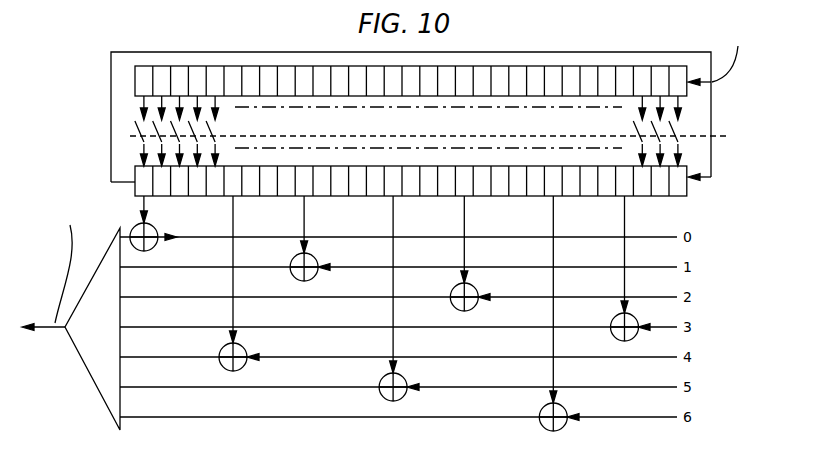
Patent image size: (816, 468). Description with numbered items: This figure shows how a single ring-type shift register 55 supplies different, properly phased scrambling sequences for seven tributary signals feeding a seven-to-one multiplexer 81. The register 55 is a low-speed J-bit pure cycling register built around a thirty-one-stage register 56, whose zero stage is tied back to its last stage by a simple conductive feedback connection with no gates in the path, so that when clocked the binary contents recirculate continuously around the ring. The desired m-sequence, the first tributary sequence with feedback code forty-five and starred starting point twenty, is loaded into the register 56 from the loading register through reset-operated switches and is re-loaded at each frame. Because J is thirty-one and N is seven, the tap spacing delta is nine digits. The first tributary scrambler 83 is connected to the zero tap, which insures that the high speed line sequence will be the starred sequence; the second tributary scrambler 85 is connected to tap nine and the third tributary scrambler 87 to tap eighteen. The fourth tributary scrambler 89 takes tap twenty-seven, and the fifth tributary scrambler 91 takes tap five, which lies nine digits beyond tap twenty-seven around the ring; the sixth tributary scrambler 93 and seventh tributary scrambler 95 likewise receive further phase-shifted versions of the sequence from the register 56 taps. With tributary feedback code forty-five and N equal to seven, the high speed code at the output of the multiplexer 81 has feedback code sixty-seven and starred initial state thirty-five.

The ring-type shift register 55 is at (100, 128).
The 31-stage register 56 is at (690, 206).
The 7 to 1 multiplexer 81 is at (88, 372).
The first tributary scrambler 83 is at (155, 228).
The second tributary scrambler 85 is at (315, 258).
The third tributary scrambler 87 is at (475, 288).
The fourth tributary scrambler 89 is at (636, 318).
The fifth tributary scrambler 91 is at (244, 348).
The sixth tributary scrambler 93 is at (404, 378).
The seventh tributary scrambler 95 is at (564, 407).